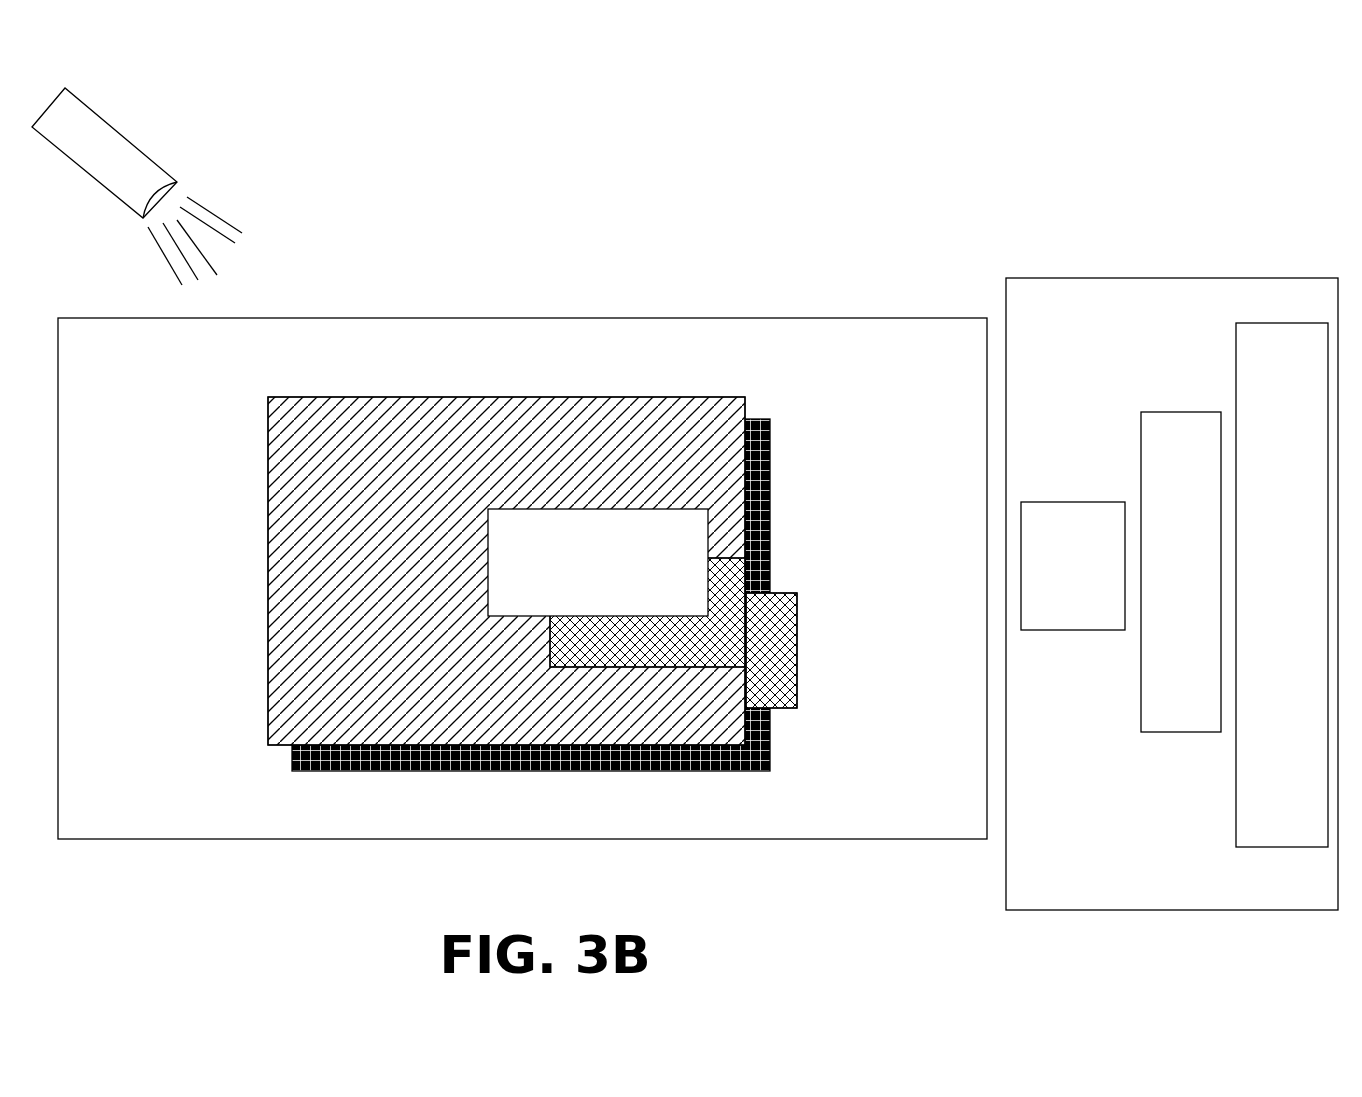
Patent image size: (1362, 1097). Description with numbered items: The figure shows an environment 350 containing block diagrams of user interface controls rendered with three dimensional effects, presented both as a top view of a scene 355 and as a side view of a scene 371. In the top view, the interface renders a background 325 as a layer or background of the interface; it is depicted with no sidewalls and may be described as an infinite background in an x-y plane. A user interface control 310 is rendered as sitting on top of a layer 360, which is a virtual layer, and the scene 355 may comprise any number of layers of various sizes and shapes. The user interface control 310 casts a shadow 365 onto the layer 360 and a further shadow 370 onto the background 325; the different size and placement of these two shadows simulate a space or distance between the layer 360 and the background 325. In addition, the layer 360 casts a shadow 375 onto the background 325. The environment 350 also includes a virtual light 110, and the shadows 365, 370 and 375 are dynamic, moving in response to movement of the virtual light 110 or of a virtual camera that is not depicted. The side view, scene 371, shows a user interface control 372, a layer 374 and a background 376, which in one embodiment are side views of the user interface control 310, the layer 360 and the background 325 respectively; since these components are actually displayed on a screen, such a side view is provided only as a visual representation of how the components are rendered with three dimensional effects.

The virtual light 110 is at (116, 142).
The user interface control 310 is at (598, 562).
The background 325 is at (177, 727).
The environment 350 is at (1172, 492).
The scene 355 is at (575, 281).
The layer 360 is at (340, 398).
The shadow 365 is at (721, 658).
The shadow 370 is at (776, 696).
The scene 371 is at (1110, 294).
The user interface control 372 is at (1073, 566).
The layer 374 is at (1181, 572).
The shadow 375 is at (331, 790).
The background 376 is at (1282, 585).